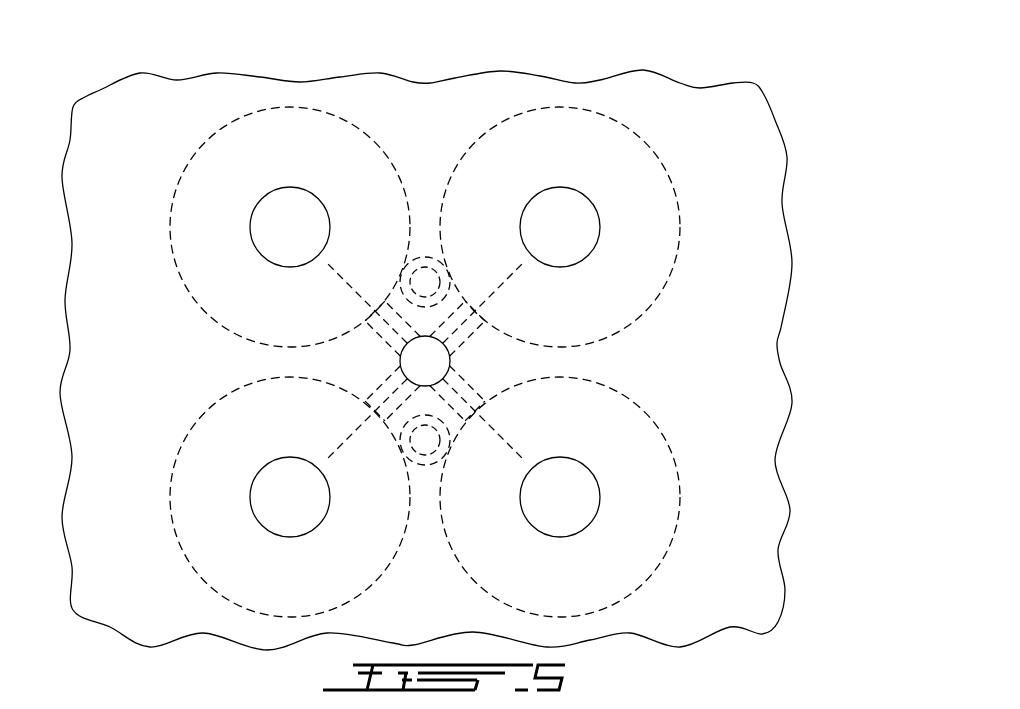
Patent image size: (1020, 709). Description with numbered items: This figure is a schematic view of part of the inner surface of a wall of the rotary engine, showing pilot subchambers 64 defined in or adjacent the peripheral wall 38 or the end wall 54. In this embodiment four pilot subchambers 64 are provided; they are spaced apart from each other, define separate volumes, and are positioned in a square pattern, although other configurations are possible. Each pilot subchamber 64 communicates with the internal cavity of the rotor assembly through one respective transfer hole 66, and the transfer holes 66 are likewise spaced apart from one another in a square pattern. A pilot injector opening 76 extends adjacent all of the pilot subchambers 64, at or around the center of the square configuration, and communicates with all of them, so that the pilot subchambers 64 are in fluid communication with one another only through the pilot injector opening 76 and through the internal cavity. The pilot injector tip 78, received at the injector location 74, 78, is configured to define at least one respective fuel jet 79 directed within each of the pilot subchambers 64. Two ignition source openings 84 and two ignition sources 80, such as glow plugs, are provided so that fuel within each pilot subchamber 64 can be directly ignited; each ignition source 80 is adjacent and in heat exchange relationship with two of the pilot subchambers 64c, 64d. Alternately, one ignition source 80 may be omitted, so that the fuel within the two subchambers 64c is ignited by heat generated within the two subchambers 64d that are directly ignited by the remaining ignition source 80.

The peripheral wall 38 is at (463, 360).
The end wall 54 is at (738, 368).
The pilot subchambers 64 is at (451, 335).
The pilot subchambers 64c is at (215, 130).
The pilot subchambers 64d is at (452, 555).
The transfer hole 66 is at (250, 219).
The cross passage 74 is at (541, 361).
The pilot injector tip 78 is at (452, 372).
The pilot injector opening 76 is at (450, 364).
The fuel jet 79 is at (347, 285).
The ignition source 80 is at (419, 266).
The ignition source opening 84 is at (432, 258).